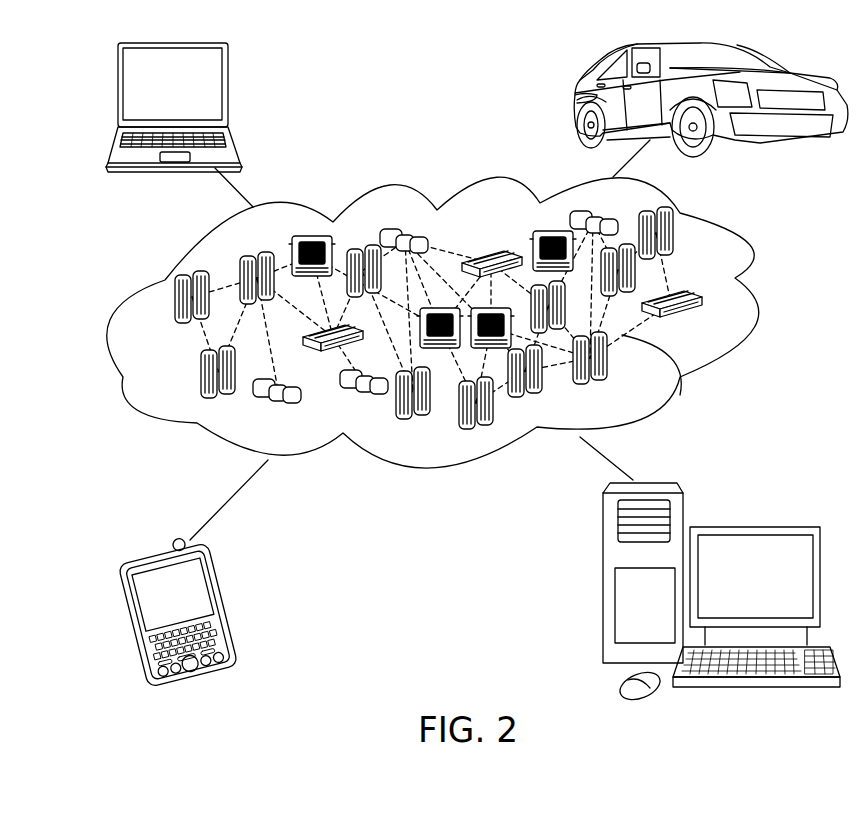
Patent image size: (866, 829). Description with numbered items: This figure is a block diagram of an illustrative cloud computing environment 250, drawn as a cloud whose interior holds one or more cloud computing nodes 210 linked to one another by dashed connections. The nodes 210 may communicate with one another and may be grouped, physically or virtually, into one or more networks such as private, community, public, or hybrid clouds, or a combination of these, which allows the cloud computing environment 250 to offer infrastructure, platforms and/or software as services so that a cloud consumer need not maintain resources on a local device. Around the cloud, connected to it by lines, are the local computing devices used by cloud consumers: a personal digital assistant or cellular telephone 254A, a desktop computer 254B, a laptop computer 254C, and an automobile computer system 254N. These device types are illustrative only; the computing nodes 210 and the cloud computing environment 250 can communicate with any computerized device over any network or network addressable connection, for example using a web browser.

The cloud computing environment 250 is at (750, 299).
The cloud computing nodes 210 is at (493, 318).
The laptop computer 254C is at (228, 92).
The automobile computer system 254N is at (579, 100).
The personal digital assistant or cellular telephone 254A is at (224, 607).
The desktop computer 254B is at (753, 527).